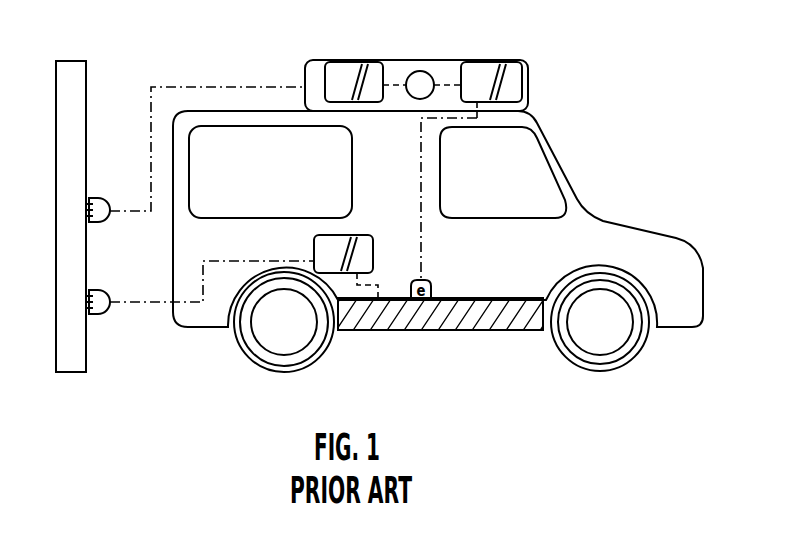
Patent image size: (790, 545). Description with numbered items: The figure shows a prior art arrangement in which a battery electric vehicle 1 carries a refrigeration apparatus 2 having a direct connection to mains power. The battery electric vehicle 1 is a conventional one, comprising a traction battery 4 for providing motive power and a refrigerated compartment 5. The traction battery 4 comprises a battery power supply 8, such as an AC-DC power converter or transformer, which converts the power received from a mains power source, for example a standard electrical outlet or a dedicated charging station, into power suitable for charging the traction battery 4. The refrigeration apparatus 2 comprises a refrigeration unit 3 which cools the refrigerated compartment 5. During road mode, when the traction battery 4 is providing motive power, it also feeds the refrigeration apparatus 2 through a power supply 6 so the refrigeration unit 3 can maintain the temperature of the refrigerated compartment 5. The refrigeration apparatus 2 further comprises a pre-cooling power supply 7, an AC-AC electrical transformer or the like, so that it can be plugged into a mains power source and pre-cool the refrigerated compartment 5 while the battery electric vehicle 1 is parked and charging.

The battery electric vehicle 1 is at (624, 102).
The refrigeration apparatus 2 is at (515, 39).
The refrigeration unit 3 is at (423, 50).
The traction battery 4 is at (475, 342).
The refrigerated compartment 5 is at (270, 172).
The power supply 6 is at (540, 74).
The pre-cooling power supply 7 is at (314, 58).
The battery power supply 8 is at (310, 286).